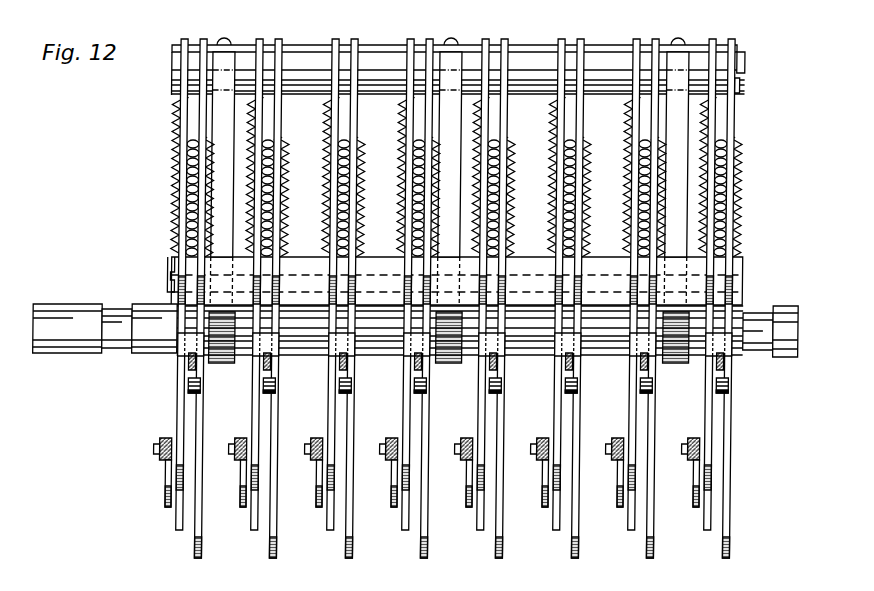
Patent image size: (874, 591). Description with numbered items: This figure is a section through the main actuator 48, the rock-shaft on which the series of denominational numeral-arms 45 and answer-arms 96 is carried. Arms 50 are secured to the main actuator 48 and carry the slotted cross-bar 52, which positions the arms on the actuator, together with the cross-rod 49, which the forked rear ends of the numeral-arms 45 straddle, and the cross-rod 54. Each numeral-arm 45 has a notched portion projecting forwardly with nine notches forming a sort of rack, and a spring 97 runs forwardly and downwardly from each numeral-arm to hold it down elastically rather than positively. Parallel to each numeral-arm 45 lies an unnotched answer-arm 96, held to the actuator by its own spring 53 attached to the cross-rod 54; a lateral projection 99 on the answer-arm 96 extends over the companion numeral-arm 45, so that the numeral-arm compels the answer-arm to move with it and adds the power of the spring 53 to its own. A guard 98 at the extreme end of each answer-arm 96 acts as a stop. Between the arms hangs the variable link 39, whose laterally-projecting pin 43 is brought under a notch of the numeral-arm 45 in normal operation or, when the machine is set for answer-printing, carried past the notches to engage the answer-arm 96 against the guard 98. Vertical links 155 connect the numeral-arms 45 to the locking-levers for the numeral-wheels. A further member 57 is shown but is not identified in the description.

The slotted cross-bar 52 is at (381, 47).
The cross-rod 49 is at (741, 84).
The arm 50 is at (451, 200).
The spring 97 is at (176, 141).
The spring 53 is at (211, 222).
The cross-rod 54 is at (545, 256).
The lower cross bar 57 is at (765, 276).
The main actuator 48 is at (801, 337).
The lateral projection 99 is at (257, 351).
The numeral-arm 45 is at (262, 512).
The answer-arm 96 is at (431, 418).
The guard 98 is at (353, 551).
The variable link 39 is at (193, 367).
The pin 43 is at (192, 389).
The vertical link 155 is at (250, 469).